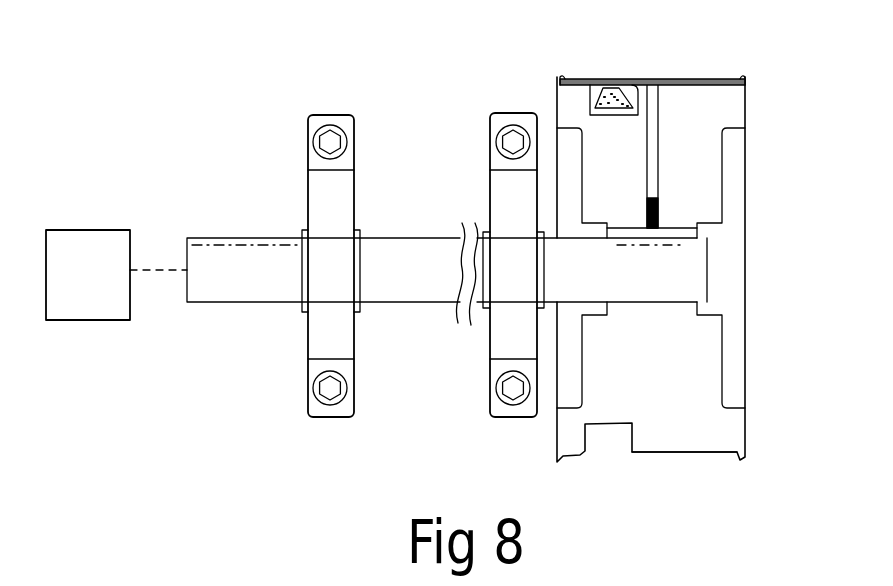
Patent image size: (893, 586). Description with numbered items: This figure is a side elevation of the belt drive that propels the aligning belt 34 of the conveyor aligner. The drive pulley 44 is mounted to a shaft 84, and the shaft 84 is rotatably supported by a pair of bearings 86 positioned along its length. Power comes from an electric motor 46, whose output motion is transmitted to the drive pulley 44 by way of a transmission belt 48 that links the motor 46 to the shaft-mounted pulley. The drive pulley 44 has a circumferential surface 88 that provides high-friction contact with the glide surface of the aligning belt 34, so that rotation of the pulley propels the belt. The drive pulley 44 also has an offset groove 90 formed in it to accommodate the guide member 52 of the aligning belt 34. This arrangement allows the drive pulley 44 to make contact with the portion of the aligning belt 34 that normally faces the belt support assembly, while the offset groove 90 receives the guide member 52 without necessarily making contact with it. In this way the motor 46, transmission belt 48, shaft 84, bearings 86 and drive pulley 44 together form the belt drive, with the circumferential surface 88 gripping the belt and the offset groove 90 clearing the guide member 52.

The aligning belt 34 is at (703, 80).
The drive pulley 44 is at (705, 458).
The electric motor 46 is at (100, 230).
The transmission belt 48 is at (153, 268).
The guide member 52 is at (592, 97).
The shaft 84 is at (387, 238).
The bearings 86 is at (352, 190).
The circumferential surface 88 is at (657, 457).
The offset groove 90 is at (628, 93).